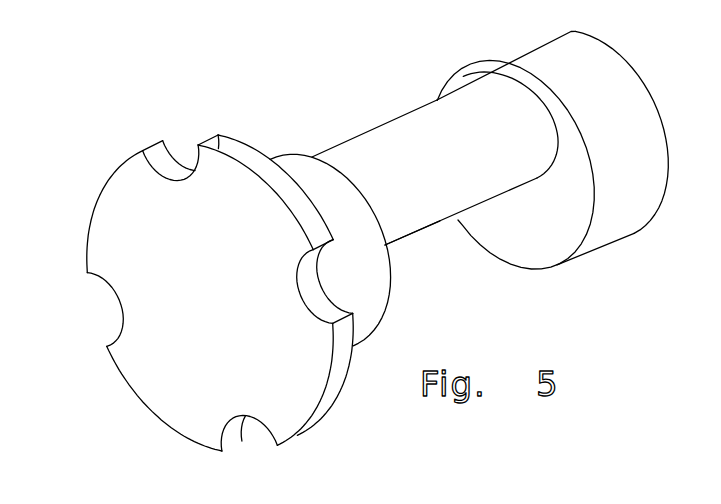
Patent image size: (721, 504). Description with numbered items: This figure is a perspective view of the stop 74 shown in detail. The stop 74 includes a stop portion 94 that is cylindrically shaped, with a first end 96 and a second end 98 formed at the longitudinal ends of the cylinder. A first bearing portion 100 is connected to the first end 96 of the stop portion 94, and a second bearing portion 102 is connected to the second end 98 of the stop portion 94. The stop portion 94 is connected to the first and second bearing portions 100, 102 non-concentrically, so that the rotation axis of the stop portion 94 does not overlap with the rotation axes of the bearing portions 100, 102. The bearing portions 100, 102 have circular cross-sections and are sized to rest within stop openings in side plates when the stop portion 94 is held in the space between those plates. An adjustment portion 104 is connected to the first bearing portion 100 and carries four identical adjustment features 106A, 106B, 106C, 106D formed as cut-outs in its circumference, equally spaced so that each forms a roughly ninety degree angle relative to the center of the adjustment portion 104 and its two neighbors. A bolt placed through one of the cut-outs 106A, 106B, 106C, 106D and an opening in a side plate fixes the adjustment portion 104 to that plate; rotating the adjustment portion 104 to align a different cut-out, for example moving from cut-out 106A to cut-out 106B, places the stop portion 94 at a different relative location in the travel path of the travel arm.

The stop 74 is at (292, 68).
The stop portion 94 is at (397, 133).
The first end 96 is at (385, 243).
The second end 98 is at (500, 75).
The first bearing portion 100 is at (293, 157).
The second bearing portion 102 is at (622, 55).
The adjustment portion 104 is at (125, 225).
The adjustment feature 106A is at (178, 152).
The adjustment feature 106B is at (318, 295).
The adjustment feature 106C is at (238, 435).
The adjustment feature 106D is at (120, 322).